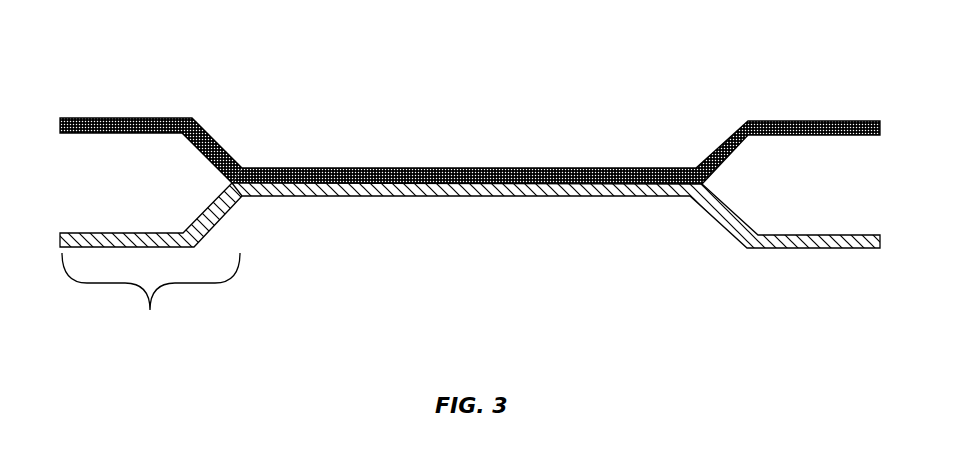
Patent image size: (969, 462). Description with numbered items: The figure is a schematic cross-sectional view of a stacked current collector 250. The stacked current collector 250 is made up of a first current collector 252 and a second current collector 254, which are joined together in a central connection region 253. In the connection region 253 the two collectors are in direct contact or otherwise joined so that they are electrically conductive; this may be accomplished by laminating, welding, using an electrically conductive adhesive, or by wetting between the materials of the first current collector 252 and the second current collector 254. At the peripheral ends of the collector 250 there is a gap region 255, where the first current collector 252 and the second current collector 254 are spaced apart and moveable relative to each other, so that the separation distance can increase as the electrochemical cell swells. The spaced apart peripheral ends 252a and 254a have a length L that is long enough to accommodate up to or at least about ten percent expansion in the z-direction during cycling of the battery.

The stacked current collector 250 is at (443, 172).
The first current collector 252 is at (470, 120).
The peripheral end of the first current collector 252a is at (135, 118).
The connection region 253 is at (700, 222).
The second current collector 254 is at (470, 209).
The peripheral end of the second current collector 254a is at (153, 233).
The gap region 255 is at (53, 110).